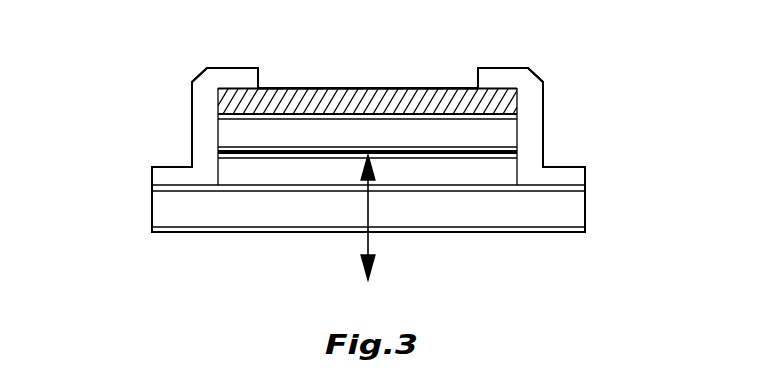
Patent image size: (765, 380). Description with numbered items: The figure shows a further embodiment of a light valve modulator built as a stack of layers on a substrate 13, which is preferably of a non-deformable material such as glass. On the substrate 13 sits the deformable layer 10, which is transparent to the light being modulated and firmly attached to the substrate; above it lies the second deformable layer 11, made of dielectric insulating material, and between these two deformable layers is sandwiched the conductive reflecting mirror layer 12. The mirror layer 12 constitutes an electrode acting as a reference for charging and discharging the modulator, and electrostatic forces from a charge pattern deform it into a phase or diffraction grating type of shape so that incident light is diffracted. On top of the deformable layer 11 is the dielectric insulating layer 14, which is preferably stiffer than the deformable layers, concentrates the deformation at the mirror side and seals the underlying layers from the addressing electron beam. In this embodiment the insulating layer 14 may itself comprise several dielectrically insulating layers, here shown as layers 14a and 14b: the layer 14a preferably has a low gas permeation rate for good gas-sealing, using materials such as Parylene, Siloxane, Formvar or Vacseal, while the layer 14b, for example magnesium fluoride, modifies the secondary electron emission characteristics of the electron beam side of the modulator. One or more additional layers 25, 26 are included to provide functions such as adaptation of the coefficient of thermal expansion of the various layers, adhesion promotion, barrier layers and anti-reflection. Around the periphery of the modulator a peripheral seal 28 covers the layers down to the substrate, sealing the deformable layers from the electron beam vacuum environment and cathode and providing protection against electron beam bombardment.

The deformable layer 10 is at (507, 172).
The deformable layer 11 is at (508, 135).
The conductive reflecting mirror layer 12 is at (218, 153).
The substrate 13 is at (560, 212).
The dielectric insulating layer 14 is at (513, 103).
The dielectrically insulating layer 14a is at (218, 117).
The dielectrically insulating layer 14b is at (392, 88).
The additional layer 25 is at (152, 228).
The additional layer 26 is at (275, 157).
The peripheral seal 28 is at (500, 80).